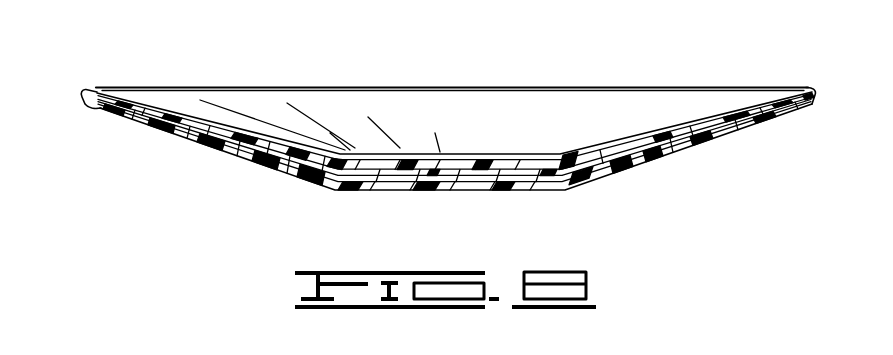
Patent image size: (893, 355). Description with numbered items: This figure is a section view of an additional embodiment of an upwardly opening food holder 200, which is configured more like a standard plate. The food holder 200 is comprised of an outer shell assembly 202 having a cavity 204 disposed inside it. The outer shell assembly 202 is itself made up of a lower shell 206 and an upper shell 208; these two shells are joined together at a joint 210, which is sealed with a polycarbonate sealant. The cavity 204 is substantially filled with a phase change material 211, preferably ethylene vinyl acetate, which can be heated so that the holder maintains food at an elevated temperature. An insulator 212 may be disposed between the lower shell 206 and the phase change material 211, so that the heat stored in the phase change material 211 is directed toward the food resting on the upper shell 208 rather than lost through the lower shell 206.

The upwardly opening food holder 200 is at (556, 77).
The outer shell assembly 202 is at (456, 135).
The cavity 204 is at (573, 186).
The lower shell 206 is at (456, 193).
The upper shell 208 is at (682, 125).
The joint 210 is at (122, 104).
The phase change material 211 is at (627, 153).
The insulator 212 is at (315, 183).